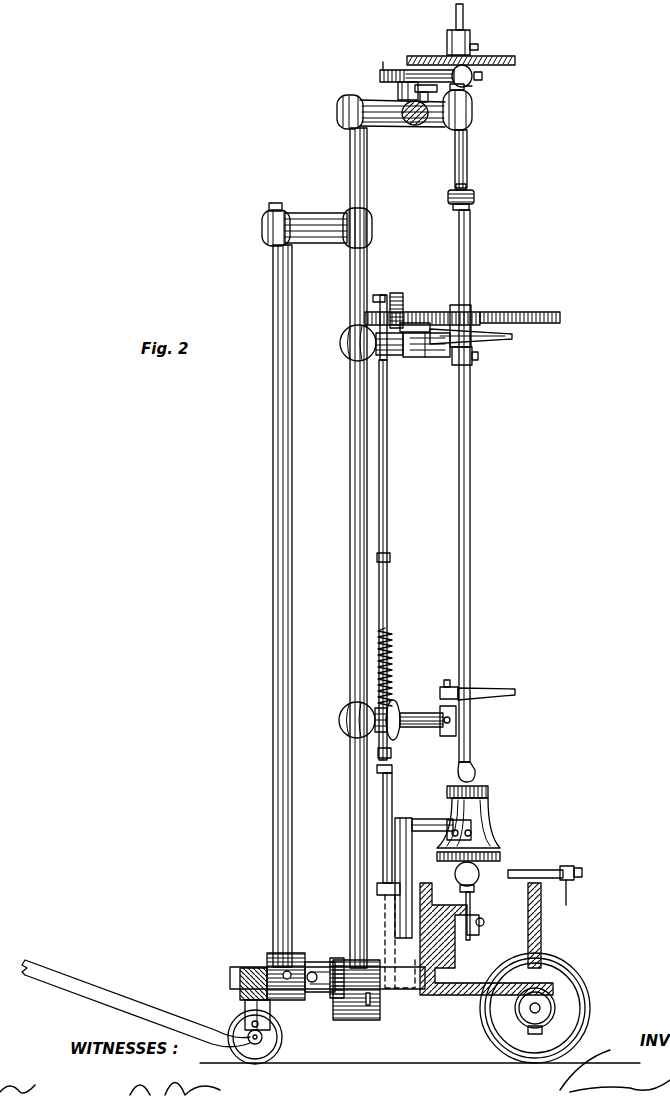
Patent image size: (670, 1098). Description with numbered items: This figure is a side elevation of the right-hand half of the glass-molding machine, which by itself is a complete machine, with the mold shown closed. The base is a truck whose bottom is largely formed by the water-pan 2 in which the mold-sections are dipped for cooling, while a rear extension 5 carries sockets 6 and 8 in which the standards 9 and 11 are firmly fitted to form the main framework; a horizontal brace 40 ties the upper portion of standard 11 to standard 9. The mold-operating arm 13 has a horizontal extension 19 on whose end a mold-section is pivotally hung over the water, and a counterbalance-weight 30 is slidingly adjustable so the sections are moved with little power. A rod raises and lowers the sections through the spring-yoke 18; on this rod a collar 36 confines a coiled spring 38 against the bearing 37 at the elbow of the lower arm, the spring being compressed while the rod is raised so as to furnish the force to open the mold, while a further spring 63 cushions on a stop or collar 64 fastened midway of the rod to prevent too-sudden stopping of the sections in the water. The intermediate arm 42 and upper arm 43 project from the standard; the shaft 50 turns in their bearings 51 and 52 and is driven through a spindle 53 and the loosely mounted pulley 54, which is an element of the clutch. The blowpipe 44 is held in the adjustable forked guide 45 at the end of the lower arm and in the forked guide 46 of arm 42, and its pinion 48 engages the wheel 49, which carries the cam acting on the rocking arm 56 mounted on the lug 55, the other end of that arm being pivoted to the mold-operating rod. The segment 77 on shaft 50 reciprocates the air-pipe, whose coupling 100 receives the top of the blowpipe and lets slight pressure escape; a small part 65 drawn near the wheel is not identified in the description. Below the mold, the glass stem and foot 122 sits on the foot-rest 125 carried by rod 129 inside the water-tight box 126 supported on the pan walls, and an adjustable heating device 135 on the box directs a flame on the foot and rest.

The water-pan 2 is at (494, 980).
The rear extension 5 is at (310, 990).
The socket 6 is at (270, 955).
The socket 8 is at (345, 956).
The standard 9 is at (276, 628).
The standard 11 is at (358, 455).
The arm 13 is at (412, 868).
The spring-yoke 18 is at (393, 810).
The horizontal extension 19 is at (464, 817).
The counterbalance-weight 30 is at (360, 1021).
The collar 36 is at (387, 460).
The bearing 37 is at (372, 362).
The coiled spring 38 is at (389, 737).
The horizontal brace 40 is at (328, 203).
The intermediate arm 42 is at (425, 357).
The upper arm 43 is at (396, 127).
The blowpipe 44 is at (470, 533).
The forked guide 45 is at (522, 686).
The forked guide 46 is at (486, 342).
The pinion 48 is at (476, 318).
The wheel 49 is at (566, 309).
The shaft 50 is at (468, 165).
The bearing 51 is at (475, 356).
The bearing 52 is at (472, 108).
The spindle 53 is at (464, 22).
The pulley 54 is at (485, 66).
The lug 55 is at (408, 360).
The rocking arm 56 is at (392, 316).
The spring 63 is at (391, 652).
The stop or collar 64 is at (386, 561).
The slide 65 is at (422, 325).
The segment 77 is at (426, 71).
The coupling 100 is at (478, 198).
The stem and foot 122 is at (482, 870).
The foot-rest 125 is at (459, 884).
The water-tight box 126 is at (486, 939).
The rod 129 is at (472, 902).
The heating device 135 is at (524, 876).